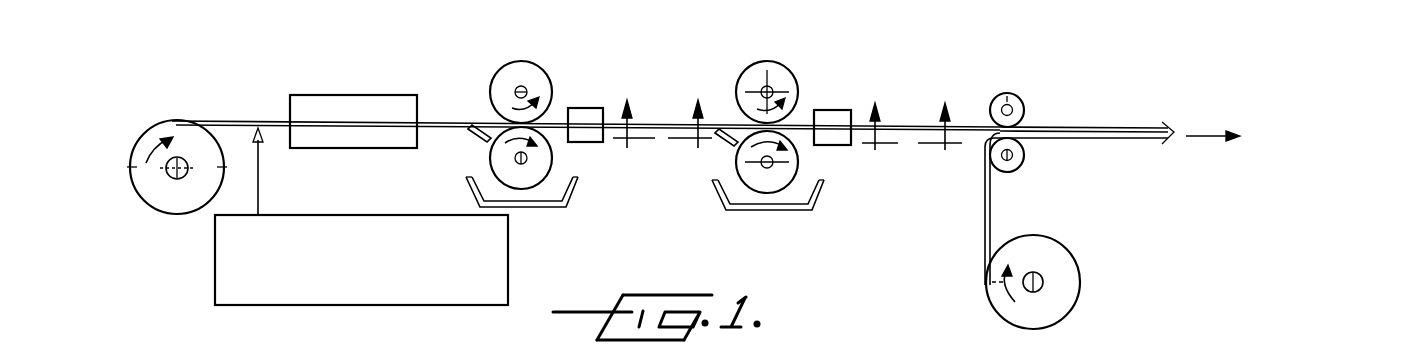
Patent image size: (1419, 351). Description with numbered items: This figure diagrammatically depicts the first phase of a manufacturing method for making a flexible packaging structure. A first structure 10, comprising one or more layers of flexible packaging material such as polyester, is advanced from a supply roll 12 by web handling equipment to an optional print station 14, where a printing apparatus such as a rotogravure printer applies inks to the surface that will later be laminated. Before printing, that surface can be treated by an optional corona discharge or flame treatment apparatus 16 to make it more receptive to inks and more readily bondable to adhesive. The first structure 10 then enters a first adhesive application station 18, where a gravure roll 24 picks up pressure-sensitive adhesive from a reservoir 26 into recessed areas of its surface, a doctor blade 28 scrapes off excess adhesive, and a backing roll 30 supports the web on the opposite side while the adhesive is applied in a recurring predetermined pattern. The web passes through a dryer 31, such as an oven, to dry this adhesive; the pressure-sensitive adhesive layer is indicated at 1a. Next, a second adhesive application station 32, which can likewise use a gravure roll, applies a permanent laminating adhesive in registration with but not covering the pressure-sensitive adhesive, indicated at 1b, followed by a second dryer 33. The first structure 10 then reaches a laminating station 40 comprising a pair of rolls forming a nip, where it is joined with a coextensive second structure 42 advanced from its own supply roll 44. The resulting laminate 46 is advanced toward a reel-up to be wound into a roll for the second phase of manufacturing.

The first structure 10 is at (585, 89).
The supply roll 12 is at (137, 154).
The print station 14 is at (348, 85).
The corona discharge or flame treatment apparatus 16 is at (311, 216).
The first adhesive application station 18 is at (492, 135).
The gravure roll 24 is at (468, 158).
The reservoir 26 is at (533, 219).
The doctor blade 28 is at (446, 100).
The backing roll 30 is at (539, 68).
The dryer 31 is at (602, 88).
The first coating layer 1a is at (673, 110).
The second adhesive application station 32 is at (768, 111).
The dryer 33 is at (839, 91).
The second coating layer 1b is at (916, 113).
The laminating station 40 is at (1043, 109).
The second structure 42 is at (948, 209).
The supply roll 44 is at (1073, 282).
The laminate 46 is at (1206, 117).